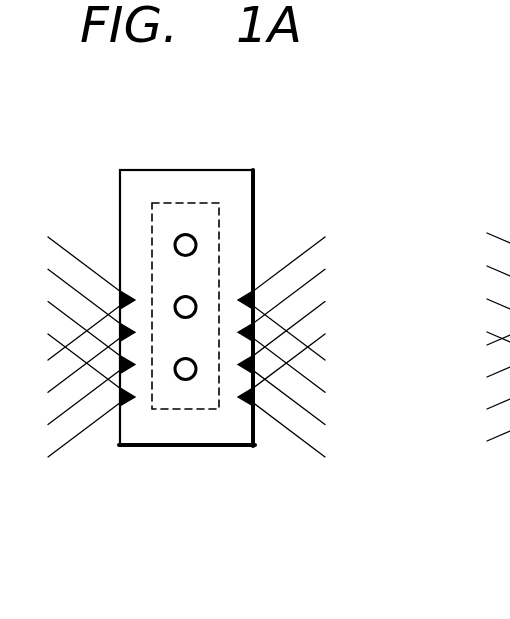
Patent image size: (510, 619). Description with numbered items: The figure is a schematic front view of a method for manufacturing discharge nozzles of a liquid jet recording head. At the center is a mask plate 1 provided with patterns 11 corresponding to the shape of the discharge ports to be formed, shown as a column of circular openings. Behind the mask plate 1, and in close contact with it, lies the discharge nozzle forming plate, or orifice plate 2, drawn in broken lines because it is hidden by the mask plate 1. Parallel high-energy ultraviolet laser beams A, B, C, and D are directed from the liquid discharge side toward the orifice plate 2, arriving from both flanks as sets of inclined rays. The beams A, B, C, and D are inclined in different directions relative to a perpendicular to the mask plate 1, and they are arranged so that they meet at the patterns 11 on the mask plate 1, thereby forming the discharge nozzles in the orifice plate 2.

The mask plate 1 is at (183, 434).
The discharge nozzle forming plate (orifice plate) 2 is at (171, 204).
The patterns 11 is at (193, 238).
The laser beam A is at (303, 245).
The laser beam B is at (298, 455).
The laser beam C is at (72, 455).
The laser beam D is at (72, 245).